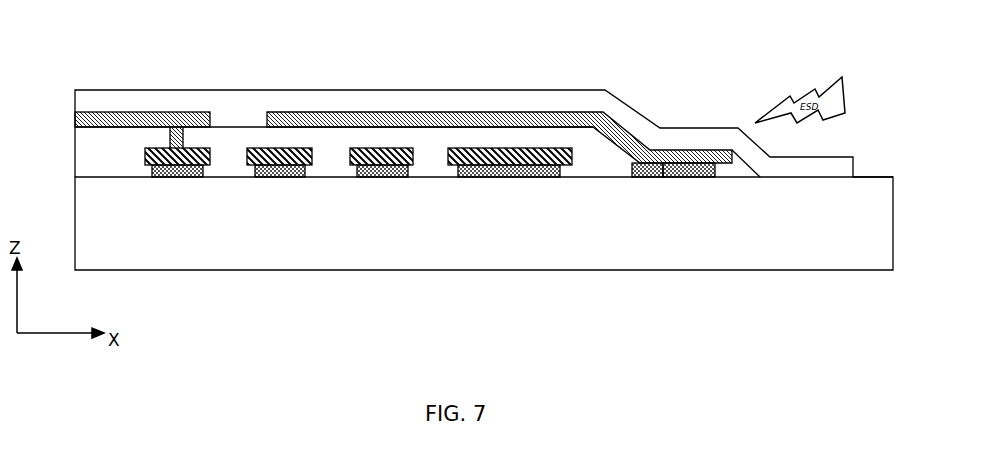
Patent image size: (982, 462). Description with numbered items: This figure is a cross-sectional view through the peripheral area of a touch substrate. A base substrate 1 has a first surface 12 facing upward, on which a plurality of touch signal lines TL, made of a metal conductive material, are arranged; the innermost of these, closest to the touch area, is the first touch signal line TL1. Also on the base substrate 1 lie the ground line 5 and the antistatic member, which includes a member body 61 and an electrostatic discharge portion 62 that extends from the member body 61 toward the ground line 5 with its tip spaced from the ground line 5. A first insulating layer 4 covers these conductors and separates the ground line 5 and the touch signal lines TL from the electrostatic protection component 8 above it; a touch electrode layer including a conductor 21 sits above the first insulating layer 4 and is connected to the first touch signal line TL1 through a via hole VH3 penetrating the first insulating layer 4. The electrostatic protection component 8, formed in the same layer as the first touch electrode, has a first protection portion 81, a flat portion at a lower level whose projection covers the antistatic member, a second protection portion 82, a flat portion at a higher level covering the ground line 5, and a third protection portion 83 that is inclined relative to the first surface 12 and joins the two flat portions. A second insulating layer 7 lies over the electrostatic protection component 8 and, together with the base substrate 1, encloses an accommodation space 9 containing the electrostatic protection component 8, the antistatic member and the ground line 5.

The base substrate 1 is at (875, 237).
The first surface 12 is at (878, 177).
The first insulating layer 4 is at (100, 148).
The ground line 5 is at (517, 170).
The second insulating layer 7 is at (95, 100).
The electrostatic protection component 8 is at (679, 45).
The first protection portion 81 is at (688, 155).
The second protection portion 82 is at (548, 118).
The third protection portion 83 is at (620, 135).
The accommodation space 9 is at (607, 165).
The wiring 21 is at (145, 118).
The via hole VH3 is at (176, 135).
The touch signal lines TL is at (378, 168).
The first touch signal line TL1 is at (176, 172).
The member body 61 is at (700, 172).
The electrostatic discharge portion 62 is at (650, 172).